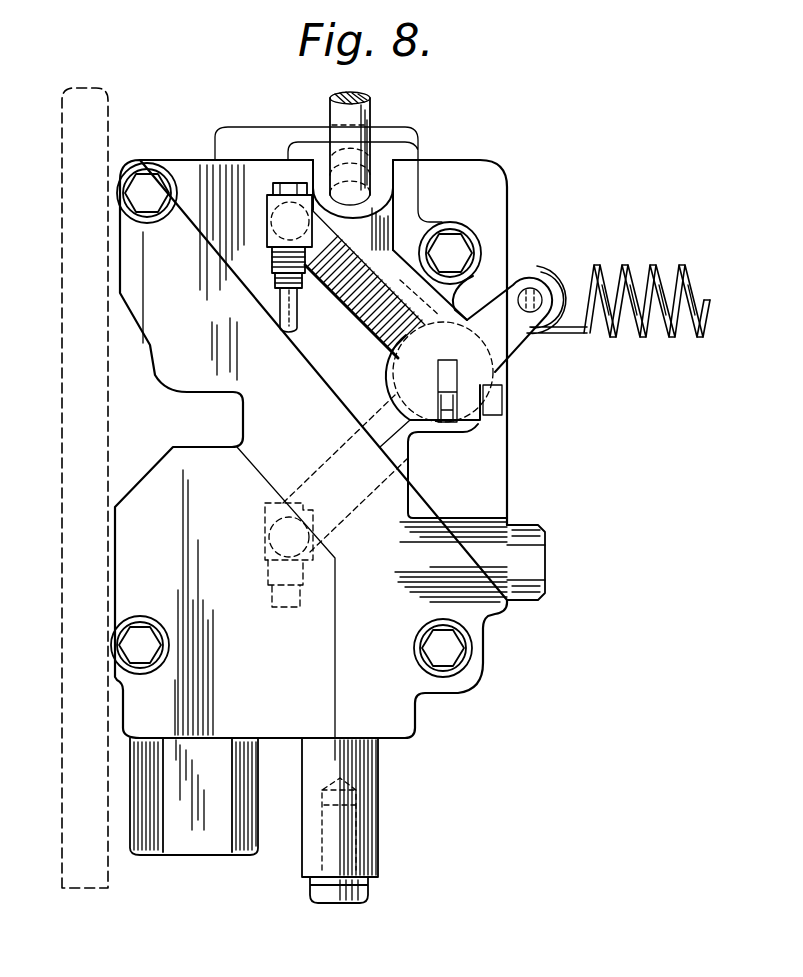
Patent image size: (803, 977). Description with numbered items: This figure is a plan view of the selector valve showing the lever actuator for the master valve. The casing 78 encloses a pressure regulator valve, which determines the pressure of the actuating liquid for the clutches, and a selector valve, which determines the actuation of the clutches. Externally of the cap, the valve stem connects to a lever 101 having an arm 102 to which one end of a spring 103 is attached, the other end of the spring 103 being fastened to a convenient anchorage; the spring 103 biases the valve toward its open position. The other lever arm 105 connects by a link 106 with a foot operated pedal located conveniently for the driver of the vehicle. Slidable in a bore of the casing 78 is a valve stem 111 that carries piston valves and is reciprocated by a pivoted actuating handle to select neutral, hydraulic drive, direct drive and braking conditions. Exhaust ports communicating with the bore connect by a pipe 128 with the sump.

The casing 78 is at (328, 491).
The lever 101 is at (470, 432).
The arm 102 is at (513, 337).
The spring 103 is at (615, 338).
The lever arm 105 is at (345, 298).
The link 106 is at (279, 313).
The valve stem 111 is at (368, 822).
The pipe 128 is at (371, 113).